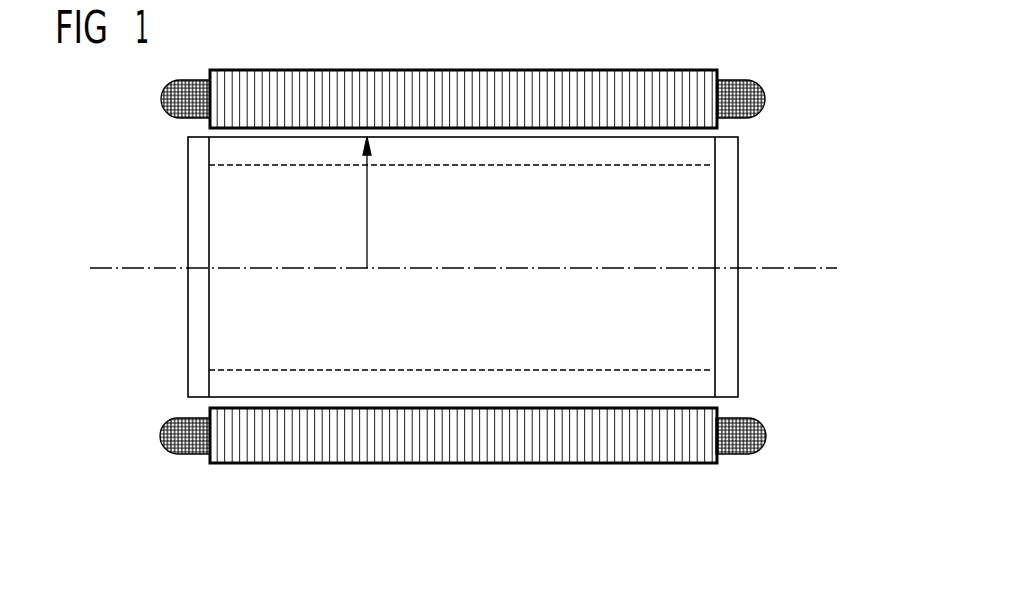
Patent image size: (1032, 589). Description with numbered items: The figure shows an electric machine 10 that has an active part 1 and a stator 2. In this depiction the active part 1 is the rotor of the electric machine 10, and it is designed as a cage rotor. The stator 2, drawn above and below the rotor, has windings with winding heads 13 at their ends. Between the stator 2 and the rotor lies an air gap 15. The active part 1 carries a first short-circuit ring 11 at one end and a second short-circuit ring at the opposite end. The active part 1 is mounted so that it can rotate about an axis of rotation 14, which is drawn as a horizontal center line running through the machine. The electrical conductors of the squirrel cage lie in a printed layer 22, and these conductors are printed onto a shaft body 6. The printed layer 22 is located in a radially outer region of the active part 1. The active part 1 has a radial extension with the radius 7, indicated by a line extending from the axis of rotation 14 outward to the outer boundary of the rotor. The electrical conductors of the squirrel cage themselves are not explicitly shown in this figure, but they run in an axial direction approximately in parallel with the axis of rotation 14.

The electric machine 10 is at (775, 45).
The active part 1 is at (745, 322).
The first short-circuit ring 11 is at (728, 183).
The shaft body 6 is at (695, 232).
The printed layer 22 is at (703, 382).
The radius 7 is at (370, 212).
The axis of rotation 14 is at (826, 268).
The air gap 15 is at (710, 128).
The stator 2 is at (405, 445).
The winding heads 13 is at (735, 455).